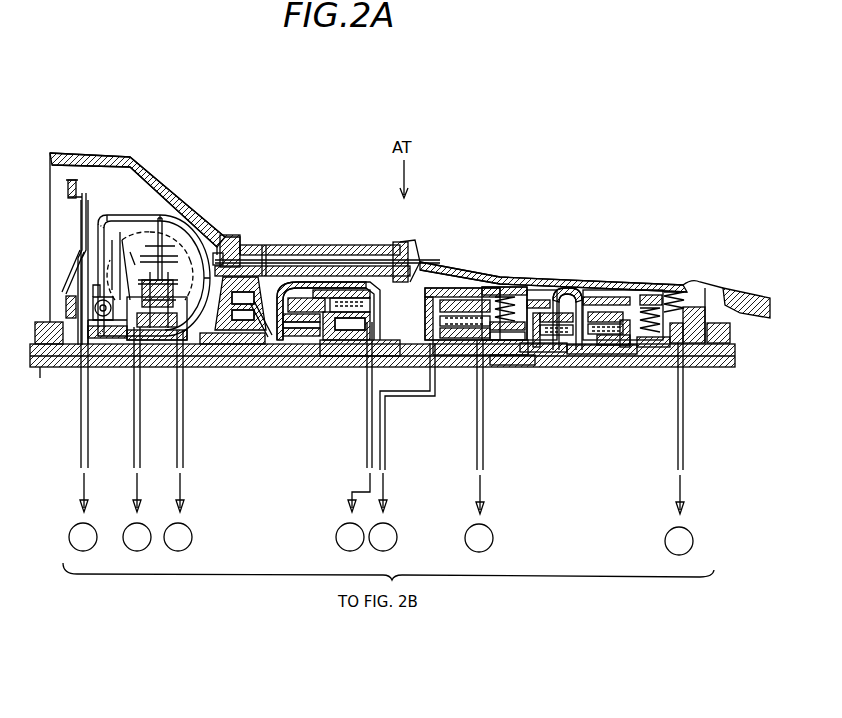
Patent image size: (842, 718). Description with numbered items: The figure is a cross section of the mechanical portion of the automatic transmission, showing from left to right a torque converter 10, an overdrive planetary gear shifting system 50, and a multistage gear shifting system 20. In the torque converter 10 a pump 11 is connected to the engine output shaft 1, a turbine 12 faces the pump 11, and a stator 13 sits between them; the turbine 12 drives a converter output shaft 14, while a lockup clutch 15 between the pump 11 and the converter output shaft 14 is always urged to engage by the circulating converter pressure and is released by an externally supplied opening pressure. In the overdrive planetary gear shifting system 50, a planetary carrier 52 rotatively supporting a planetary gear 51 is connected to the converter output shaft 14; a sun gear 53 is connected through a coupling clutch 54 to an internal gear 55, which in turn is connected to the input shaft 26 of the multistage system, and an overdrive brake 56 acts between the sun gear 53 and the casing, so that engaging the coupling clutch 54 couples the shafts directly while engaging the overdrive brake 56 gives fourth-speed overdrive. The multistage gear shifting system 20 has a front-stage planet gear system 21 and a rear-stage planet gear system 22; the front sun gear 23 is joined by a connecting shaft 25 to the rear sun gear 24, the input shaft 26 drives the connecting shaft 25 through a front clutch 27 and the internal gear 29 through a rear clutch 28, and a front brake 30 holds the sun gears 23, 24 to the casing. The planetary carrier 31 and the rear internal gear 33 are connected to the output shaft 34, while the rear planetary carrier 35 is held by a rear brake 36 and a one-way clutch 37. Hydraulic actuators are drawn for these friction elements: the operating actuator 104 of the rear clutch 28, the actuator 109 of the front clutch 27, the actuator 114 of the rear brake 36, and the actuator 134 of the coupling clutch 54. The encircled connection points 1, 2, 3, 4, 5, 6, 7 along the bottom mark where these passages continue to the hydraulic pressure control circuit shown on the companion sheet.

The torque converter 10 is at (182, 228).
The pump 11 is at (192, 247).
The turbine 12 is at (127, 253).
The stator 13 is at (165, 292).
The converter output shaft 14 is at (96, 352).
The lockup clutch 15 is at (80, 240).
The multistage gear shifting system 20 is at (552, 298).
The front-stage planet gear system 21 is at (570, 296).
The rear-stage planet gear system 22 is at (614, 297).
The sun gear 23 is at (556, 367).
The sun gear 24 is at (607, 366).
The connecting shaft 25 is at (578, 362).
The input shaft 26 is at (467, 364).
The front clutch 27 is at (457, 285).
The rear clutch 28 is at (515, 286).
The internal gear 29 is at (578, 300).
The front brake 30 is at (477, 297).
The planetary carrier 31 is at (533, 363).
The internal gear 33 is at (648, 296).
The output shaft 34 is at (631, 362).
The planetary carrier 35 is at (600, 298).
The rear brake 36 is at (678, 287).
The one-way clutch 37 is at (656, 367).
The overdrive planetary gear shifting system 50 is at (322, 286).
The planetary gear 51 is at (270, 247).
The planetary carrier 52 is at (323, 358).
The sun gear 53 is at (280, 360).
The coupling clutch 54 is at (364, 255).
The internal gear 55 is at (299, 298).
The overdrive brake 56 is at (343, 290).
The operating actuator 104 is at (494, 362).
The actuator 109 is at (438, 358).
The actuator 114 is at (689, 366).
The actuator 134 is at (360, 362).
The engine output shaft 1 is at (83, 375).
The connection line 2 is at (137, 439).
The connection line 3 is at (178, 440).
The connection line 4 is at (354, 436).
The connection line 5 is at (383, 512).
The connection line 6 is at (479, 446).
The connection line 7 is at (679, 449).